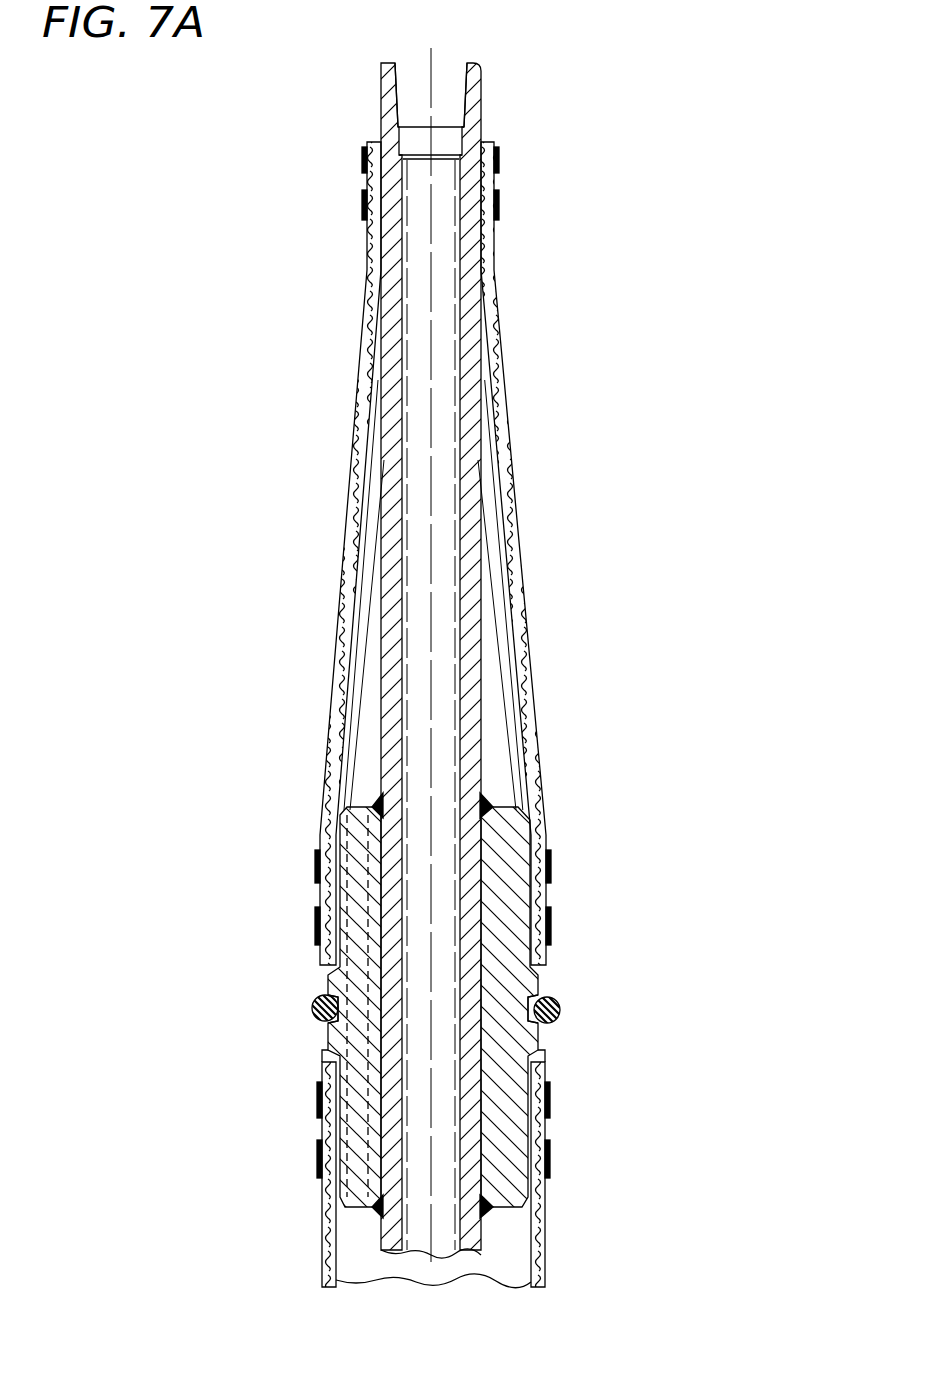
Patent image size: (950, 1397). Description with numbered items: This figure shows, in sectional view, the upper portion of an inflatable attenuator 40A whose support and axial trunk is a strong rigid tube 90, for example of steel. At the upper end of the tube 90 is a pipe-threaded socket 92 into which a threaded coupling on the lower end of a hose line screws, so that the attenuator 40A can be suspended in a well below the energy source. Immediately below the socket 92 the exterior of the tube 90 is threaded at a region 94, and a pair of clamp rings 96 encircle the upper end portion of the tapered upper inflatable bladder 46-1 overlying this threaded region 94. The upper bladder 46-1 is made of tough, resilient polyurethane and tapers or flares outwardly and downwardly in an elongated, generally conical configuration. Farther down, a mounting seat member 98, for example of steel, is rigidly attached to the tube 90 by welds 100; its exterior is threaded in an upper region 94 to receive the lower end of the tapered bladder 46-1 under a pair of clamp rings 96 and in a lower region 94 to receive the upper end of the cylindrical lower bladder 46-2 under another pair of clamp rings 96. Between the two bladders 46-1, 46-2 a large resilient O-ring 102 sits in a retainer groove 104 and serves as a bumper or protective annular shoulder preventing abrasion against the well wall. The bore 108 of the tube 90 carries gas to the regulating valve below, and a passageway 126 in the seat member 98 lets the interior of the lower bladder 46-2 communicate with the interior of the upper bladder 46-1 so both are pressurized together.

The inflatable attenuator 40A is at (712, 616).
The tube 90 is at (470, 376).
The pipe-threaded socket 92 is at (469, 88).
The threaded region 94 is at (478, 186).
The clamp rings 96 is at (362, 202).
The mounting seat member 98 is at (503, 960).
The welds 100 is at (380, 806).
The O-ring 102 is at (561, 1006).
The retainer groove 104 is at (527, 997).
The bore 108 is at (443, 330).
The passageway 126 is at (347, 979).
The upper inflatable bladder 46-1 is at (513, 492).
The cylindrical inflatable lower bladder 46-2 is at (547, 1267).